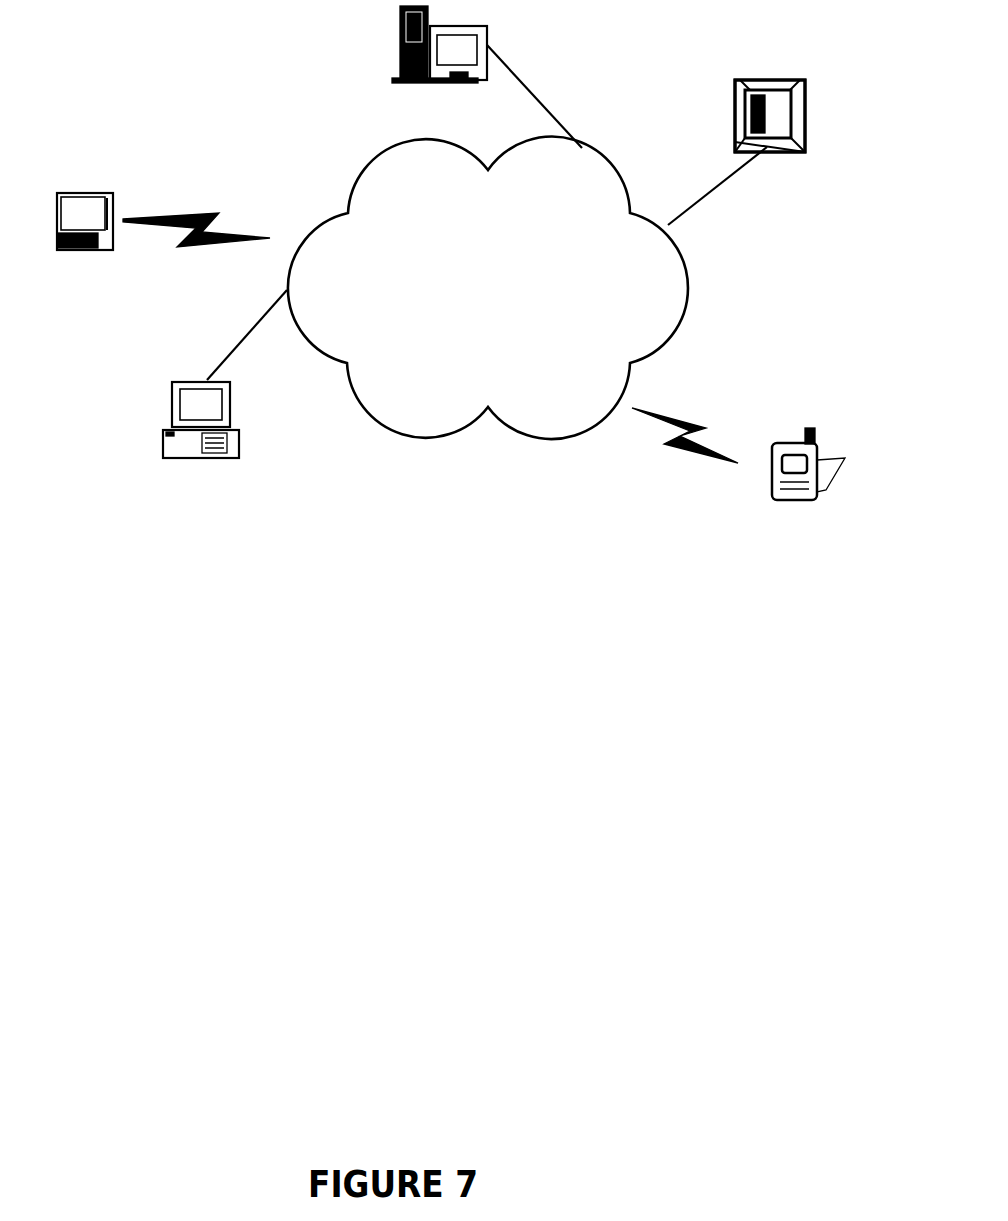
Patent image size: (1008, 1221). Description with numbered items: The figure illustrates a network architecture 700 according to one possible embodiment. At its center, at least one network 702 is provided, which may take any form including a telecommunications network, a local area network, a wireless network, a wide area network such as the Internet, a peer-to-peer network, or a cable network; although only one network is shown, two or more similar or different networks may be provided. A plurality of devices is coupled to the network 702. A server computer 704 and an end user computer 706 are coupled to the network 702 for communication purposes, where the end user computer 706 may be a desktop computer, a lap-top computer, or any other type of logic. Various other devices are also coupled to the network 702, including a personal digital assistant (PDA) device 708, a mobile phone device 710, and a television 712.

The network architecture 700 is at (393, 740).
The network 702 is at (548, 440).
The server computer 704 is at (400, 43).
The end user computer 706 is at (163, 437).
The personal digital assistant (PDA) device 708 is at (83, 193).
The mobile phone device 710 is at (770, 445).
The television 712 is at (736, 79).